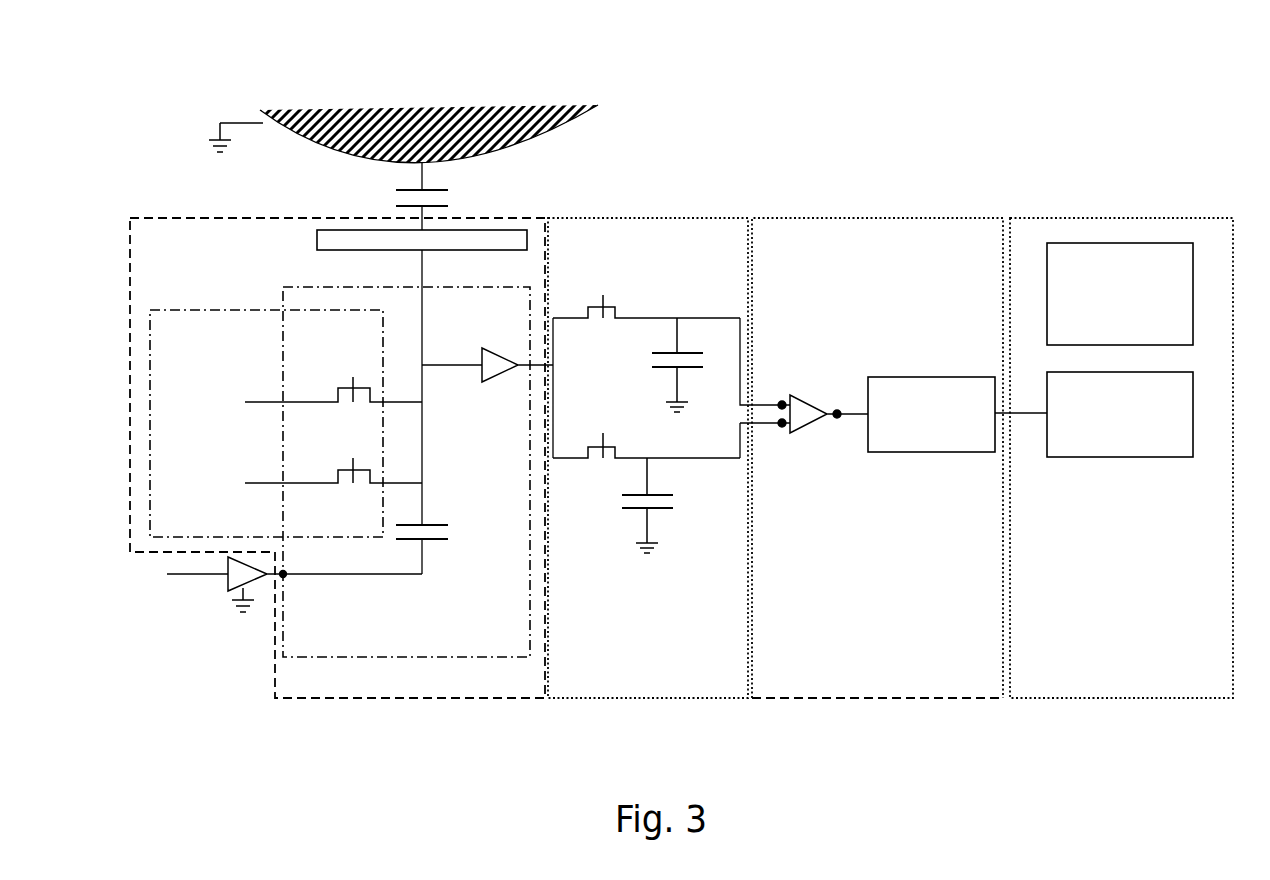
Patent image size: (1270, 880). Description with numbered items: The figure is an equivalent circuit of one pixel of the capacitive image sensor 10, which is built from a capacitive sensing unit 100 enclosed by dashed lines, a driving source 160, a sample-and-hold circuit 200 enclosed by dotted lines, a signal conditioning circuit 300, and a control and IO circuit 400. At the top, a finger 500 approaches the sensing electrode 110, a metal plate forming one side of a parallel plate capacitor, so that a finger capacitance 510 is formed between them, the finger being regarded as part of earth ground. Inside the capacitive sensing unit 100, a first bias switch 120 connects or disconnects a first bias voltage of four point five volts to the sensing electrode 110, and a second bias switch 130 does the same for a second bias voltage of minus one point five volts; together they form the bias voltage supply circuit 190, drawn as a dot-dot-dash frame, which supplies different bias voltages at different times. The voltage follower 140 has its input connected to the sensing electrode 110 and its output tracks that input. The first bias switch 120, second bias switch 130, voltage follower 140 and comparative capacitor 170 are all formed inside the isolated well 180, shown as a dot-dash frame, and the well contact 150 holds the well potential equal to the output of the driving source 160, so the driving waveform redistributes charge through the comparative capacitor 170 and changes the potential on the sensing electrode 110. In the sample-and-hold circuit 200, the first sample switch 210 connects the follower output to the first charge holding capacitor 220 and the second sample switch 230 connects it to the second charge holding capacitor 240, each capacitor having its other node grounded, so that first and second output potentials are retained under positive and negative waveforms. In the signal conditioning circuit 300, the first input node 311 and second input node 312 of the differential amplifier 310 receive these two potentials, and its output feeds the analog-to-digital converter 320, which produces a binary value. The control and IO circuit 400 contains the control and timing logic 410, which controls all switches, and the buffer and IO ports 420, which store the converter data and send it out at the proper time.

The capacitive image sensor 10 is at (1196, 120).
The capacitive sensing unit 100 is at (305, 699).
The sensing electrode 110 is at (316, 240).
The first bias switch 120 is at (350, 388).
The second bias switch 130 is at (350, 470).
The voltage follower 140 is at (505, 377).
The well contact 150 is at (284, 578).
The driving source 160 is at (227, 589).
The comparative capacitor 170 is at (447, 545).
The isolated well 180 is at (482, 658).
The bias voltage supply circuit 190 is at (150, 312).
The sample-and-hold circuit 200 is at (633, 699).
The first sample switch 210 is at (612, 306).
The first charge holding capacitor 220 is at (665, 373).
The second sample switch 230 is at (620, 453).
The second charge holding capacitor 240 is at (642, 510).
The signal conditioning circuit 300 is at (865, 699).
The differential amplifier 310 is at (805, 425).
The first input node 311 is at (785, 401).
The second input node 312 is at (777, 428).
The analog-to-digital converter 320 is at (928, 453).
The control and IO circuit 400 is at (1105, 699).
The control and timing logic 410 is at (1120, 294).
The buffer and IO ports 420 is at (1120, 414).
The finger 500 is at (333, 148).
The finger capacitance 510 is at (432, 189).